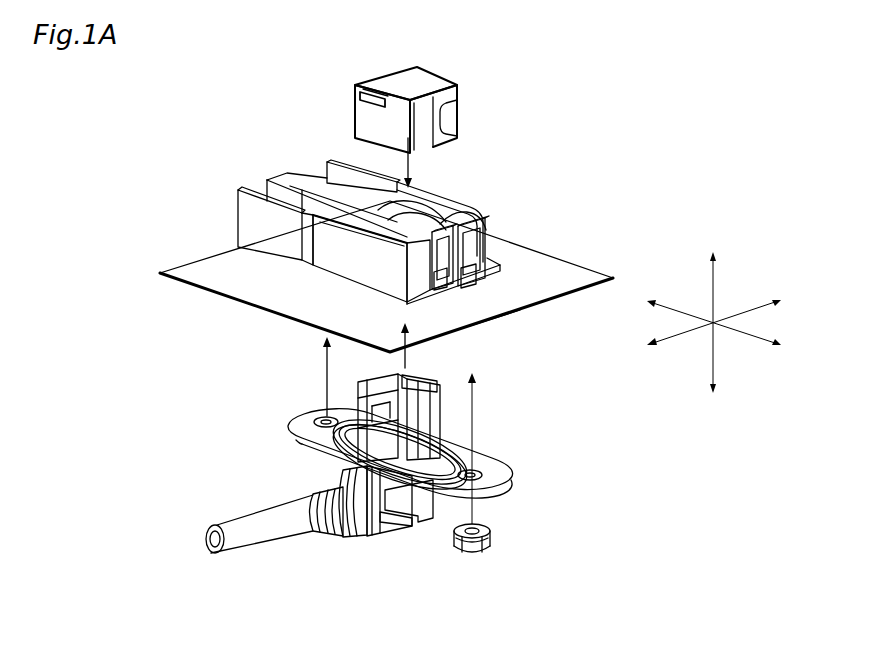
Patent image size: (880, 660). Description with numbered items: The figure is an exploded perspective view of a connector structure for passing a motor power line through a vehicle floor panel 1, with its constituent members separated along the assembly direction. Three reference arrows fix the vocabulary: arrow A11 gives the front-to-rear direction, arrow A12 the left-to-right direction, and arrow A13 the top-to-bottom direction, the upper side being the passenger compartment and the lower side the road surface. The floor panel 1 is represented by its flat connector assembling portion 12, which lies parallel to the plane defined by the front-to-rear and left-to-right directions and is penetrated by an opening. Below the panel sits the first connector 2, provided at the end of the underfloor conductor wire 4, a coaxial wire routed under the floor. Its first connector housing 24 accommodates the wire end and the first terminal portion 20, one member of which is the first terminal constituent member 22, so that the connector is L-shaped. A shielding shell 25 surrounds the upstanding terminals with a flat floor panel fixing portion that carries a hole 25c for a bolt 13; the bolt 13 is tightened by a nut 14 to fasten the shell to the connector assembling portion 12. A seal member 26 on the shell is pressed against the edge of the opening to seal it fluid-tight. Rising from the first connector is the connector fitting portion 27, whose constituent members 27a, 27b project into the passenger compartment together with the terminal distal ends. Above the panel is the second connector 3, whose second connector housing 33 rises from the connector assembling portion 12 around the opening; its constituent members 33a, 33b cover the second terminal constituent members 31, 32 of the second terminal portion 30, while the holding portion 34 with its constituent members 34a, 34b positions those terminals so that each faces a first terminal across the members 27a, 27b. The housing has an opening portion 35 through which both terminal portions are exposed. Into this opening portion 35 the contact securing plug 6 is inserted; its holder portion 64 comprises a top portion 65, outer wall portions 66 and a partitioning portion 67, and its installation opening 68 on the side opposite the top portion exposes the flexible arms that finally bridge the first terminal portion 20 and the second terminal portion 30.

The floor panel 1 is at (605, 268).
The first connector 2 is at (353, 552).
The second connector 3 is at (243, 181).
The underfloor conductor wire 4 is at (247, 551).
The contact securing plug 6 is at (472, 80).
The connector assembling portion 12 is at (561, 268).
The bolt 13 is at (470, 328).
The nut 14 is at (483, 549).
The first terminal portion 20 is at (349, 455).
The first terminal constituent member 22 is at (308, 452).
The first connector housing 24 is at (393, 522).
The shielding shell 25 is at (497, 437).
The hole 25c is at (321, 414).
The seal member 26 is at (412, 500).
The connector fitting portion 27 is at (416, 384).
The connector fitting portion constituent member 27a is at (428, 386).
The connector fitting portion constituent member 27b is at (388, 368).
The second terminal portion 30 is at (498, 177).
The second terminal constituent member 31 is at (432, 232).
The second terminal constituent member 32 is at (398, 228).
The second connector housing 33 is at (265, 187).
The second connector housing constituent member 33a is at (336, 160).
The second connector housing constituent member 33b is at (243, 222).
The holding portion 34 is at (382, 260).
The holding portion constituent member 34a is at (468, 215).
The holding portion constituent member 34b is at (343, 248).
The opening portion 35 is at (410, 203).
The holder portion 64 is at (419, 89).
The top portion 65 is at (395, 76).
The outer wall portions 66 is at (360, 118).
The partitioning portion 67 is at (448, 86).
The installation opening 68 is at (453, 129).
The arrow indicating front-to-rear direction A11 is at (723, 311).
The arrow indicating left-to-right direction A12 is at (728, 322).
The arrow indicating top-to-bottom direction A13 is at (697, 317).